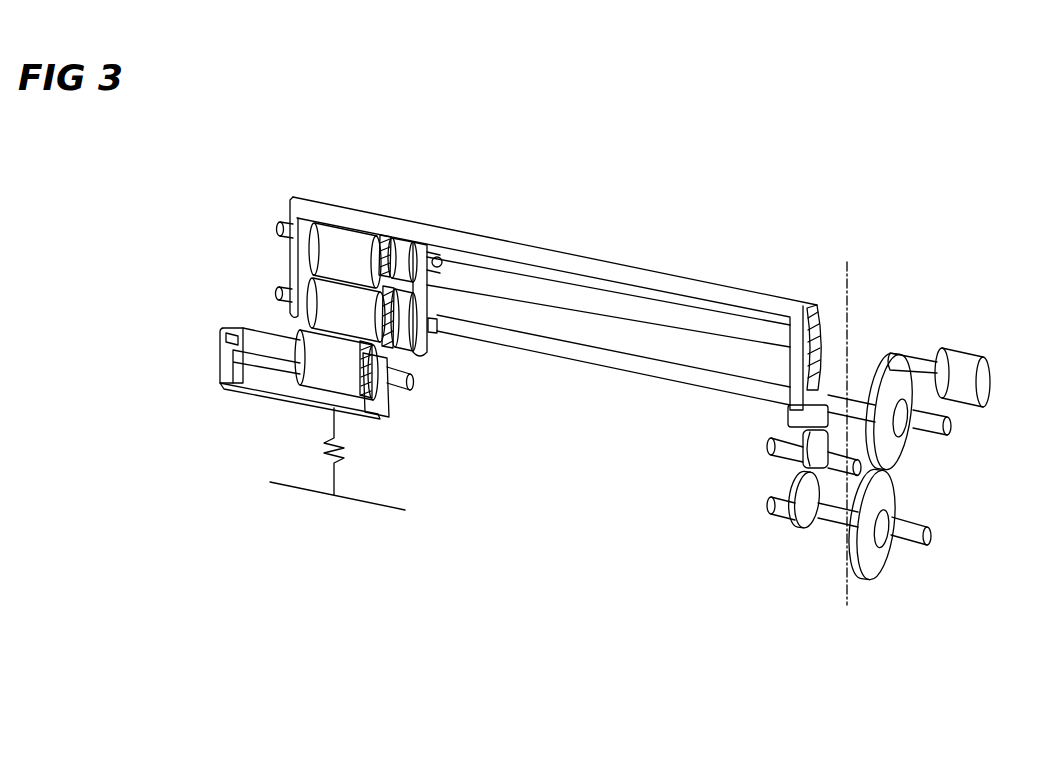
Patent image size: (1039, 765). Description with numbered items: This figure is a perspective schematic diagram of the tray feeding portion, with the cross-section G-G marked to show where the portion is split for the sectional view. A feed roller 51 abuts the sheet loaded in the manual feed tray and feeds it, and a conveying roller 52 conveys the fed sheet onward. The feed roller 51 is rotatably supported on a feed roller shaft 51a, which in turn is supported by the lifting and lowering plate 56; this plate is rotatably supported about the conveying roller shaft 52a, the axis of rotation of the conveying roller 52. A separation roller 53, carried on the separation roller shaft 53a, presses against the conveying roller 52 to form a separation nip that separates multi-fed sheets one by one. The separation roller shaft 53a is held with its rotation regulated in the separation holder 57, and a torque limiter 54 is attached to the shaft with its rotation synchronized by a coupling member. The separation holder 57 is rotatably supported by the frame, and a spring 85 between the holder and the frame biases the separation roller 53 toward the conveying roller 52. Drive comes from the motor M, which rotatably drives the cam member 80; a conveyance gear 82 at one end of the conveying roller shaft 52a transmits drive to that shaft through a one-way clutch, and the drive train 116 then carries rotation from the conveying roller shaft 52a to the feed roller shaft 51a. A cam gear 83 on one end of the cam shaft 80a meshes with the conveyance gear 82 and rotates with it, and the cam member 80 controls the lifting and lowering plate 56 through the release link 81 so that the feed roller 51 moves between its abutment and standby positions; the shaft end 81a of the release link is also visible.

The feed roller 51 is at (337, 232).
The feed roller shaft 51a is at (278, 229).
The conveying roller 52 is at (350, 297).
The conveying roller shaft 52a is at (562, 352).
The separation roller 53 is at (320, 368).
The separation roller shaft 53a is at (222, 338).
The torque limiter 54 is at (270, 352).
The lifting and lowering plate 56 is at (588, 266).
The separation holder 57 is at (385, 400).
The cam member 80 is at (803, 522).
The cam shaft 80a is at (782, 510).
The release link 81 is at (790, 452).
The gear shaft 81a is at (772, 445).
The conveyance gear 82 is at (890, 383).
The cam gear 83 is at (873, 570).
The spring 85 is at (340, 467).
The drive train 116 is at (403, 299).
The motor M is at (953, 348).
The cross-section G- G is at (847, 262).